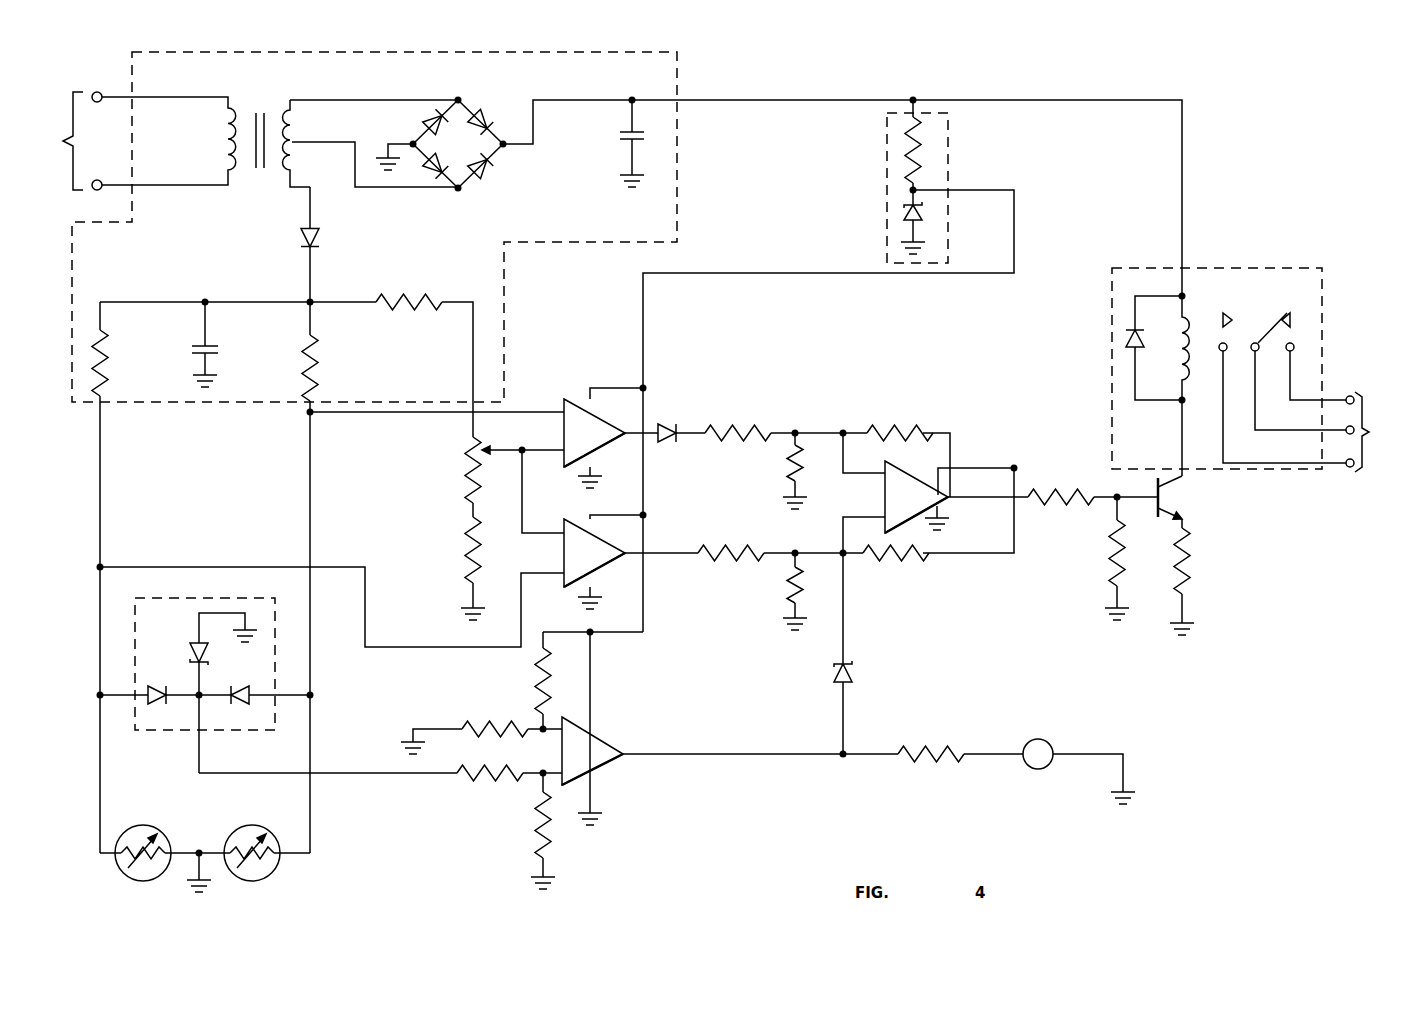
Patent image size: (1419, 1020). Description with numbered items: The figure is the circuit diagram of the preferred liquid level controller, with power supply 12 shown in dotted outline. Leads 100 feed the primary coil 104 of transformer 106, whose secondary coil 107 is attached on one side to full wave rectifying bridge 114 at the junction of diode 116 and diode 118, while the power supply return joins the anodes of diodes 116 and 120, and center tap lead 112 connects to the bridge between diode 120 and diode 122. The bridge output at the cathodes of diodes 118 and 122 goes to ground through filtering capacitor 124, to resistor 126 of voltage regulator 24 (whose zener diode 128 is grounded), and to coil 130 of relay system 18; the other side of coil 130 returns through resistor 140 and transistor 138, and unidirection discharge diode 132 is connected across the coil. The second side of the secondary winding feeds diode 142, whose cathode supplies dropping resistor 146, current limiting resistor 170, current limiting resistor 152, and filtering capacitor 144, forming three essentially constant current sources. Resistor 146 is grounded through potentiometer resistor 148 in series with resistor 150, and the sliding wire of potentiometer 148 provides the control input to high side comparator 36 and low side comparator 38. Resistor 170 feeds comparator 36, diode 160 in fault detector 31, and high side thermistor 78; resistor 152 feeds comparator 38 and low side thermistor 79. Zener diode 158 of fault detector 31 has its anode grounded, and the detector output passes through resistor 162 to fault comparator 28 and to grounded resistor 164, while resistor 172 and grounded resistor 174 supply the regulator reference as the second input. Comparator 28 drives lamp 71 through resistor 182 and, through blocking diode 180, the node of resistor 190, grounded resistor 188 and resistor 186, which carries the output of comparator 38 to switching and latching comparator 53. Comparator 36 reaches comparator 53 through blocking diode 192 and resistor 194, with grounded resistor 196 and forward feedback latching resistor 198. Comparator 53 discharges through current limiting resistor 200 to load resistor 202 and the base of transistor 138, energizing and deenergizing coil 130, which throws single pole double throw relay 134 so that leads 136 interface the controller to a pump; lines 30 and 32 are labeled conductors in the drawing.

The power supply 12 is at (504, 300).
The leads 100 is at (68, 141).
The primary coil 104 is at (228, 143).
The transformer 106 is at (262, 179).
The secondary coil 107 is at (280, 105).
The lead 112 is at (320, 142).
The diode 142 is at (319, 238).
The full wave rectifying bridge 114 is at (514, 157).
The diode 116 is at (422, 117).
The diode 118 is at (494, 120).
The diode 120 is at (424, 170).
The diode 122 is at (500, 171).
The filtering capacitor 124 is at (624, 133).
The voltage regulator 24 is at (887, 142).
The resistor 126 is at (922, 124).
The zener diode 128 is at (926, 212).
The relay system 18 is at (1140, 266).
The coil 130 is at (1190, 318).
The unidirection discharge diode 132 is at (1126, 339).
The single pole double throw relay 134 is at (1292, 327).
The leads 136 is at (1317, 411).
The transistor 138 is at (1178, 498).
The resistor 140 is at (1190, 558).
The current limiting resistor 200 is at (1062, 492).
The voltage dividing or load resistor 202 is at (1109, 557).
The switching and latching comparator 53 is at (913, 506).
The forward feedback latching resistor 198 is at (900, 431).
The resistor 190 is at (890, 557).
The high side comparator 36 is at (593, 443).
The low side comparator 38 is at (593, 563).
The blocking diode 192 is at (665, 424).
The resistor 194 is at (753, 426).
The resistor 196 is at (789, 466).
The resistor 186 is at (733, 550).
The resistor 188 is at (789, 585).
The blocking diode 180 is at (851, 668).
The fault comparator 28 is at (589, 763).
The resistor 172 is at (540, 684).
The resistor 174 is at (490, 722).
The resistor 162 is at (495, 780).
The resistor 164 is at (549, 840).
The resistor 182 is at (922, 750).
The lamp 71 is at (1048, 745).
The current limiting resistor 152 is at (108, 369).
The filtering capacitor 144 is at (214, 346).
The current limiting resistor 170 is at (318, 369).
The dropping resistor 146 is at (425, 296).
The potentiometer resistor 148 is at (468, 471).
The resistor 150 is at (468, 543).
The sensor line 30 is at (100, 498).
The sensor line 32 is at (313, 498).
The fault detector 31 is at (165, 598).
The zener diode 158 is at (191, 645).
The diode 160 is at (240, 686).
The low side thermistor 79 is at (143, 825).
The high side thermistor 78 is at (252, 825).